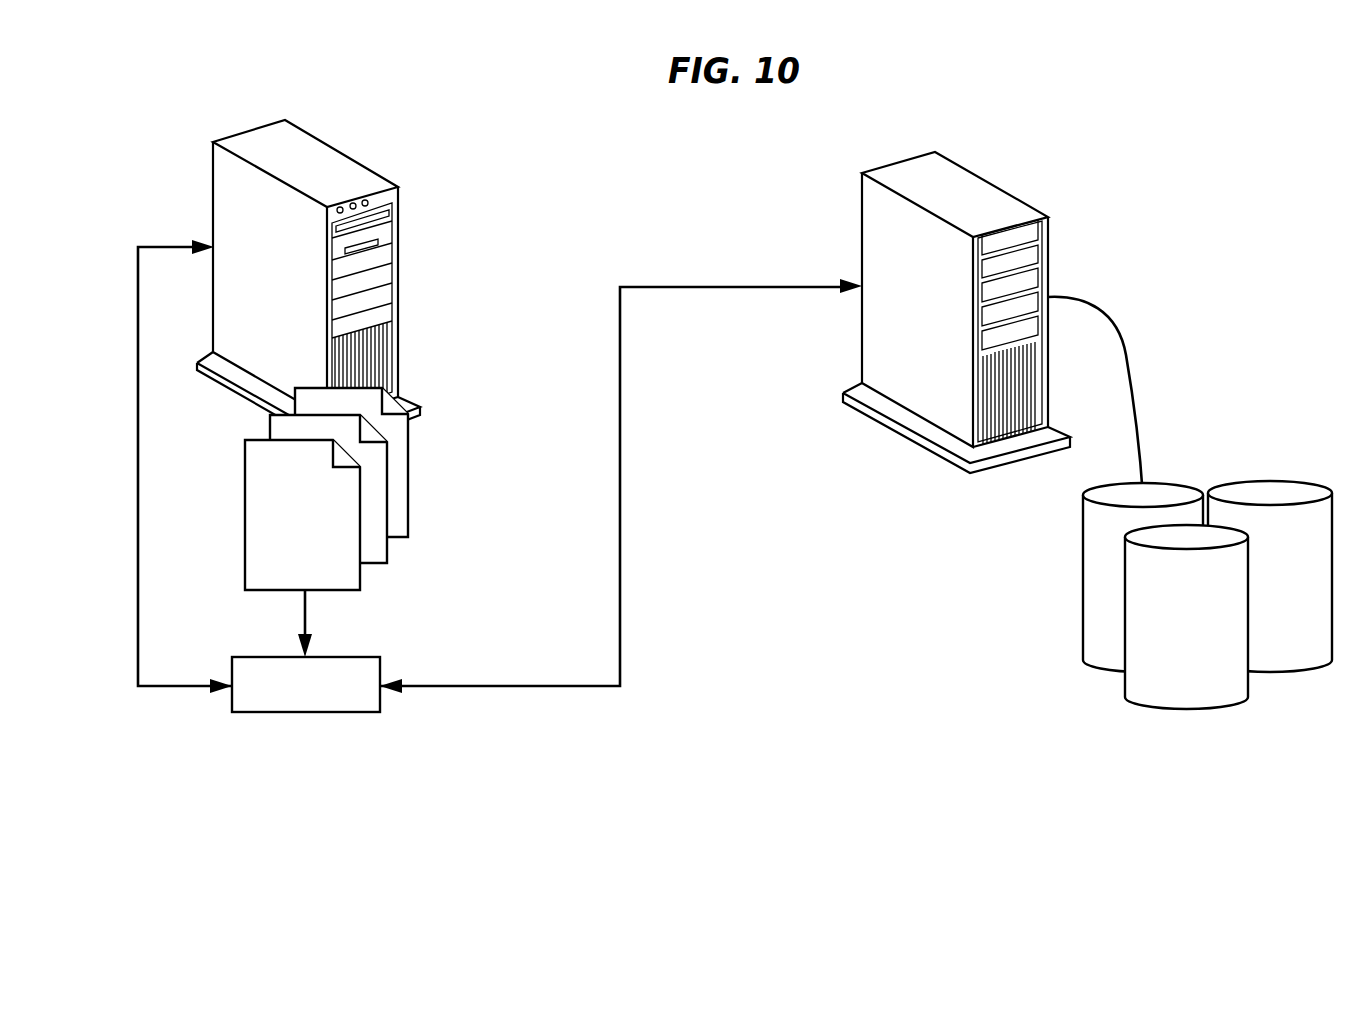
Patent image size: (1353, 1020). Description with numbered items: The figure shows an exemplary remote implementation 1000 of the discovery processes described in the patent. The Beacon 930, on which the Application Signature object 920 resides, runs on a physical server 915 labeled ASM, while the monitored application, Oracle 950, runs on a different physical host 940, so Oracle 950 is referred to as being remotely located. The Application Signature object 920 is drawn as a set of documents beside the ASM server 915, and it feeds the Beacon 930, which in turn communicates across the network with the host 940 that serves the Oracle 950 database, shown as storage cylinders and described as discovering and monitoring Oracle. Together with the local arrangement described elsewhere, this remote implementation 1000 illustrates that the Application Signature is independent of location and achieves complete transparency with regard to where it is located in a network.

The system 1000 is at (747, 154).
The physical server 915 is at (257, 128).
The Application Signature object 920 is at (412, 453).
The Beacon 930 is at (257, 712).
The physical host 940 is at (1002, 190).
The Oracle 950 is at (1287, 483).